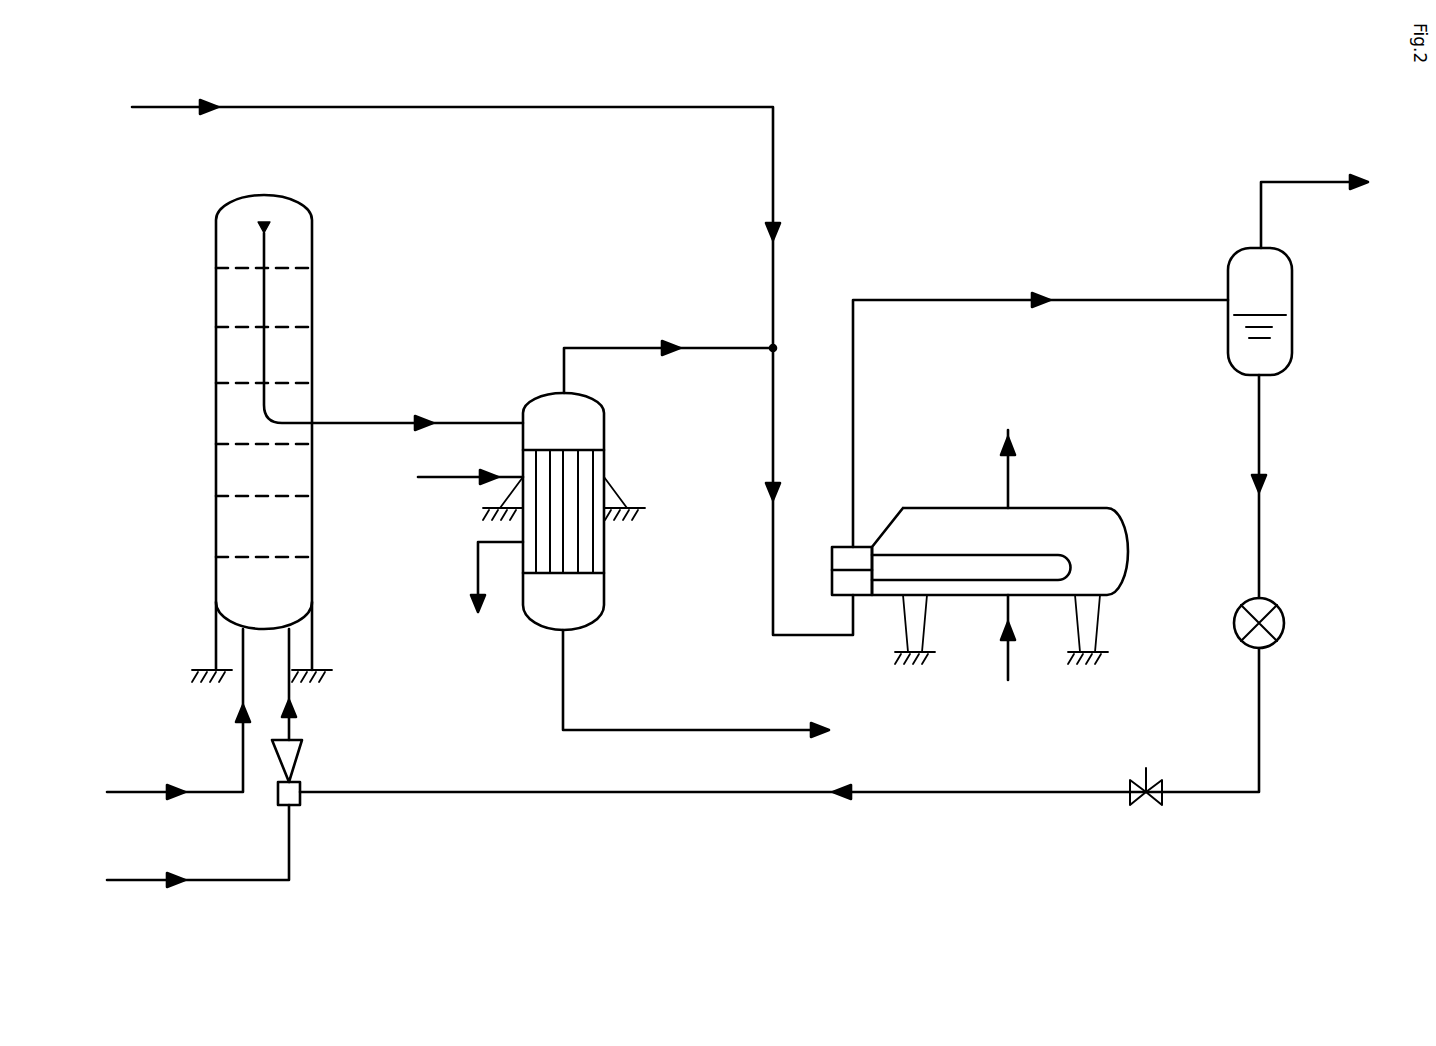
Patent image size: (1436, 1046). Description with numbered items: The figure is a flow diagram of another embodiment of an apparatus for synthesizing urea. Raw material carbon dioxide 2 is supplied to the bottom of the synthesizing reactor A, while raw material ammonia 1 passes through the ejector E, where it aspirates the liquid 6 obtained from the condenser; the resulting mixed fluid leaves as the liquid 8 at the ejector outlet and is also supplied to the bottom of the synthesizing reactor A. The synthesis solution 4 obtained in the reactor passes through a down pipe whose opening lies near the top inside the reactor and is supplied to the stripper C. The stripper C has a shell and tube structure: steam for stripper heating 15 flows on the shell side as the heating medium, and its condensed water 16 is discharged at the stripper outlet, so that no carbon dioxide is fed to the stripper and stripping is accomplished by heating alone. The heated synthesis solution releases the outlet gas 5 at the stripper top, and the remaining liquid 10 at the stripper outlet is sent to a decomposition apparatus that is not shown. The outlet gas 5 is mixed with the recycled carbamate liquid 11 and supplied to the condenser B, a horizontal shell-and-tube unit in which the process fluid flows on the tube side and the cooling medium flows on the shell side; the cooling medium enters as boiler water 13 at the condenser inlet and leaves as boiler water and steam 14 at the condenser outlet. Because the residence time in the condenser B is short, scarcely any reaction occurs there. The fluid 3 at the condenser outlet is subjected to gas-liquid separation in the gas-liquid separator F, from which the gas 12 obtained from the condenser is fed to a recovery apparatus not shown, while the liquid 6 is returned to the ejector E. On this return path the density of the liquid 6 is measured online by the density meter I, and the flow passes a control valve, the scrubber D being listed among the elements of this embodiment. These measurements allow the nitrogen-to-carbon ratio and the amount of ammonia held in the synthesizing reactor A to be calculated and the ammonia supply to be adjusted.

The synthesizing reactor A is at (312, 225).
The condenser B is at (1105, 512).
The stripper C is at (604, 418).
The scrubber D is at (1142, 780).
The ejector E is at (300, 775).
The gas-liquid separator F is at (1292, 330).
The density meter I is at (1284, 620).
The raw material ammonia 1 is at (158, 792).
The raw material carbon dioxide 2 is at (165, 880).
The fluid at condenser outlet 3 is at (916, 300).
The synthesis solution at synthesis reactor outlet 4 is at (380, 423).
The outlet gas at stripper top 5 is at (632, 348).
The liquid obtained from condenser 6 is at (1262, 458).
The liquid at ejector outlet 8 is at (290, 727).
The liquid at stripper outlet 10 is at (670, 730).
The recycled carbamate liquid 11 is at (178, 107).
The gas obtained from condenser 12 is at (1312, 182).
The cooling medium at condenser inlet 13 is at (1005, 657).
The cooling medium at condenser outlet 14 is at (1010, 450).
The steam for stripper heating 15 is at (450, 477).
The condensed water at stripper outlet 16 is at (478, 565).